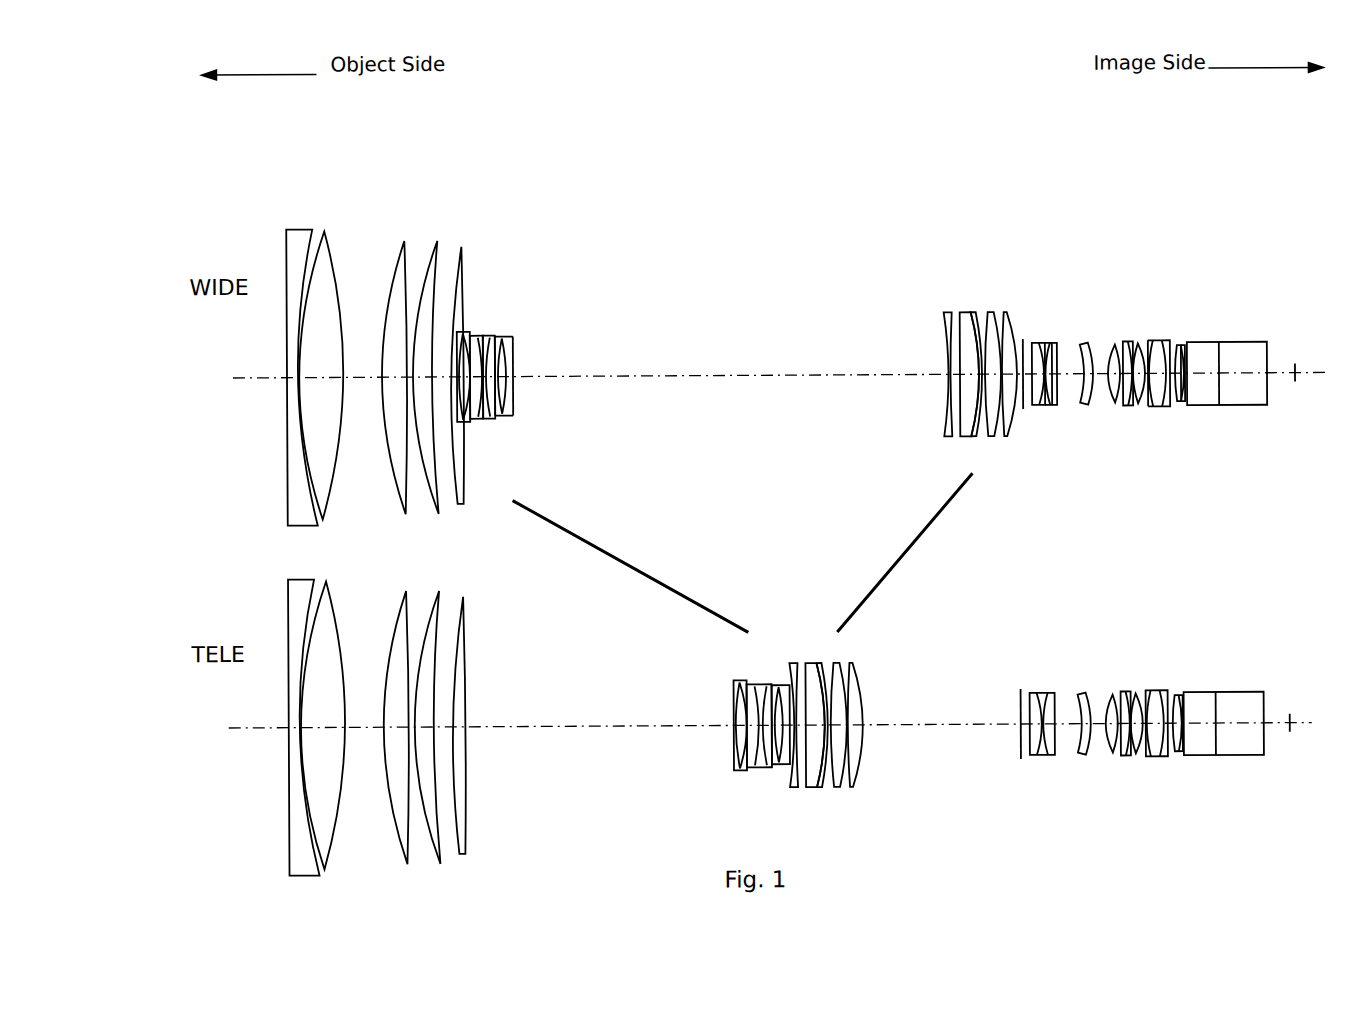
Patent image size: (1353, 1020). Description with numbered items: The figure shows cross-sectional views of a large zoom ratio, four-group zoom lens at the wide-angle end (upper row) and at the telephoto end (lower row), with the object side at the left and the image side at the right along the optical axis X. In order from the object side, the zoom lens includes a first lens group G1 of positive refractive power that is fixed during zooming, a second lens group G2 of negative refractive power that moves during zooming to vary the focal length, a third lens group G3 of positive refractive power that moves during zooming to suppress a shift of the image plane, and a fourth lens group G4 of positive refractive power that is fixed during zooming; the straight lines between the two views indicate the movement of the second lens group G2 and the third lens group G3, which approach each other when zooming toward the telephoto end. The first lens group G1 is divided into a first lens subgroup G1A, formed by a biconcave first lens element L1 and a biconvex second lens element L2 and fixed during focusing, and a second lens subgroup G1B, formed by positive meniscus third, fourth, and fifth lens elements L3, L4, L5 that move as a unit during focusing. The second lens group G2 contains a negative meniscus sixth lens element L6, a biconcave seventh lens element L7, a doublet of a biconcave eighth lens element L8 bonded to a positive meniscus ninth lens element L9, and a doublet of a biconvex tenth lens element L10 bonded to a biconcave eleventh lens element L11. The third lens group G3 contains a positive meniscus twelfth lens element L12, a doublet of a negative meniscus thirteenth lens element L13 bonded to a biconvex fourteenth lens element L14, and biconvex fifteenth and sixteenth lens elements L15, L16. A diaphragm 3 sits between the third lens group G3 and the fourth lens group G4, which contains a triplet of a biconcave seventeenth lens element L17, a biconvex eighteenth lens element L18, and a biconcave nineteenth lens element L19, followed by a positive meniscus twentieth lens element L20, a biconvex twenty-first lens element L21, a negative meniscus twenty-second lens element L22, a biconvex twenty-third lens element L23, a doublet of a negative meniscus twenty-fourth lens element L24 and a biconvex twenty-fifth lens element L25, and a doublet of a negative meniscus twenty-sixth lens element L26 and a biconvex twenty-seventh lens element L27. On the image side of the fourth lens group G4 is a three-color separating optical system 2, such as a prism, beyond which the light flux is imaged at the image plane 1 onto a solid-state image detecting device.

The first lens group G1 is at (465, 131).
The first lens subgroup G1A is at (375, 176).
The second lens subgroup G1B is at (463, 176).
The second lens group G2 is at (515, 131).
The third lens group G3 is at (1022, 215).
The fourth lens group G4 is at (1190, 215).
The first lens element L1 is at (304, 233).
The second lens element L2 is at (325, 232).
The third lens element L3 is at (405, 242).
The fourth lens element L4 is at (438, 241).
The fifth lens element L5 is at (460, 248).
The sixth lens element L6 is at (462, 333).
The seventh lens element L7 is at (477, 335).
The eighth lens element L8 is at (484, 335).
The ninth lens element L9 is at (493, 336).
The tenth lens element L10 is at (503, 336).
The eleventh lens element L11 is at (514, 337).
The twelfth lens element L12 is at (945, 317).
The thirteenth lens element L13 is at (965, 317).
The fourteenth lens element L14 is at (975, 317).
The fifteenth lens element L15 is at (992, 317).
The sixteenth lens element L16 is at (1013, 317).
The seventeenth lens element L17 is at (1037, 347).
The eighteenth lens element L18 is at (1047, 347).
The nineteenth lens element L19 is at (1057, 347).
The twentieth lens element L20 is at (1083, 347).
The twenty-first lens element L21 is at (1116, 349).
The twenty-second lens element L22 is at (1127, 346).
The twenty-third lens element L23 is at (1137, 348).
The twenty-fourth lens element L24 is at (1155, 345).
The twenty-fifth lens element L25 is at (1167, 345).
The twenty-sixth lens element L26 is at (1178, 350).
The twenty-seventh lens element L27 is at (1183, 350).
The image plane 1 is at (1295, 369).
The color separating optical system 2 is at (1232, 347).
The diaphragm 3 is at (1022, 359).
The optical axis X is at (253, 385).